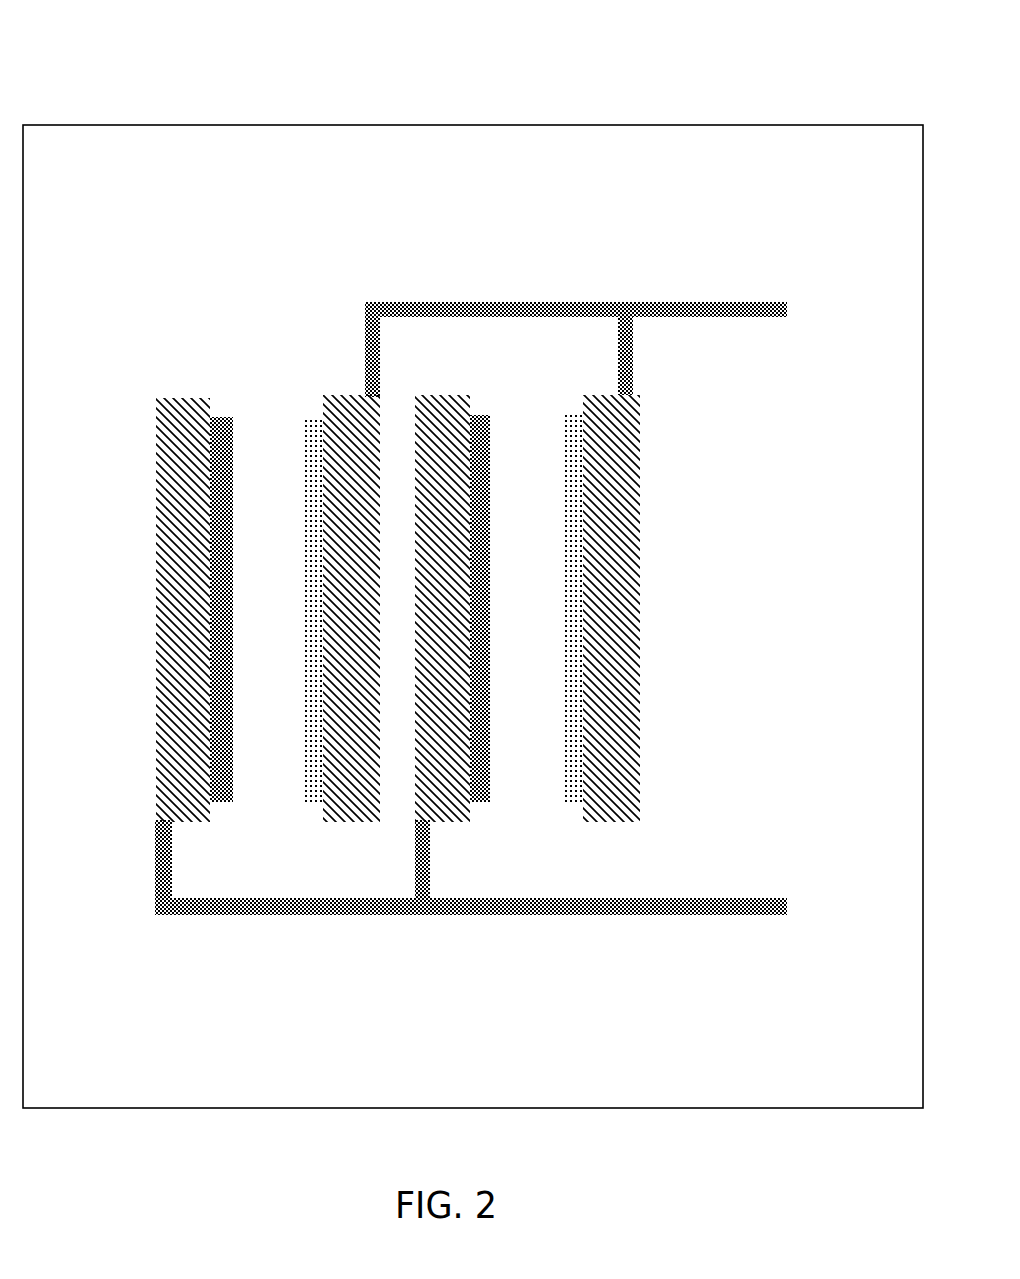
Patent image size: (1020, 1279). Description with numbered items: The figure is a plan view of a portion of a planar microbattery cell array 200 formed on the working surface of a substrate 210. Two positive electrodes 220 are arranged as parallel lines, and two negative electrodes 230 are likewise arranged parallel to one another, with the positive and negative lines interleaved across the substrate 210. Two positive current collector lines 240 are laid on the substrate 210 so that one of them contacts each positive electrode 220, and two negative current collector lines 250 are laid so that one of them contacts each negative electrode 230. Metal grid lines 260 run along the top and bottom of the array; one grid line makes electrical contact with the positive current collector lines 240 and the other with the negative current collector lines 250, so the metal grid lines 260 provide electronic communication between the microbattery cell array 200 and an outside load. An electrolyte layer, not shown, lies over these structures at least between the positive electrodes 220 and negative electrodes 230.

The planar microbattery cell array 200 is at (126, 101).
The substrate 210 is at (852, 1054).
The positive electrode 220 is at (482, 415).
The negative electrode 230 is at (575, 415).
The positive current collector line 240 is at (457, 817).
The negative current collector line 250 is at (607, 817).
The metal grid line 260 is at (627, 898).